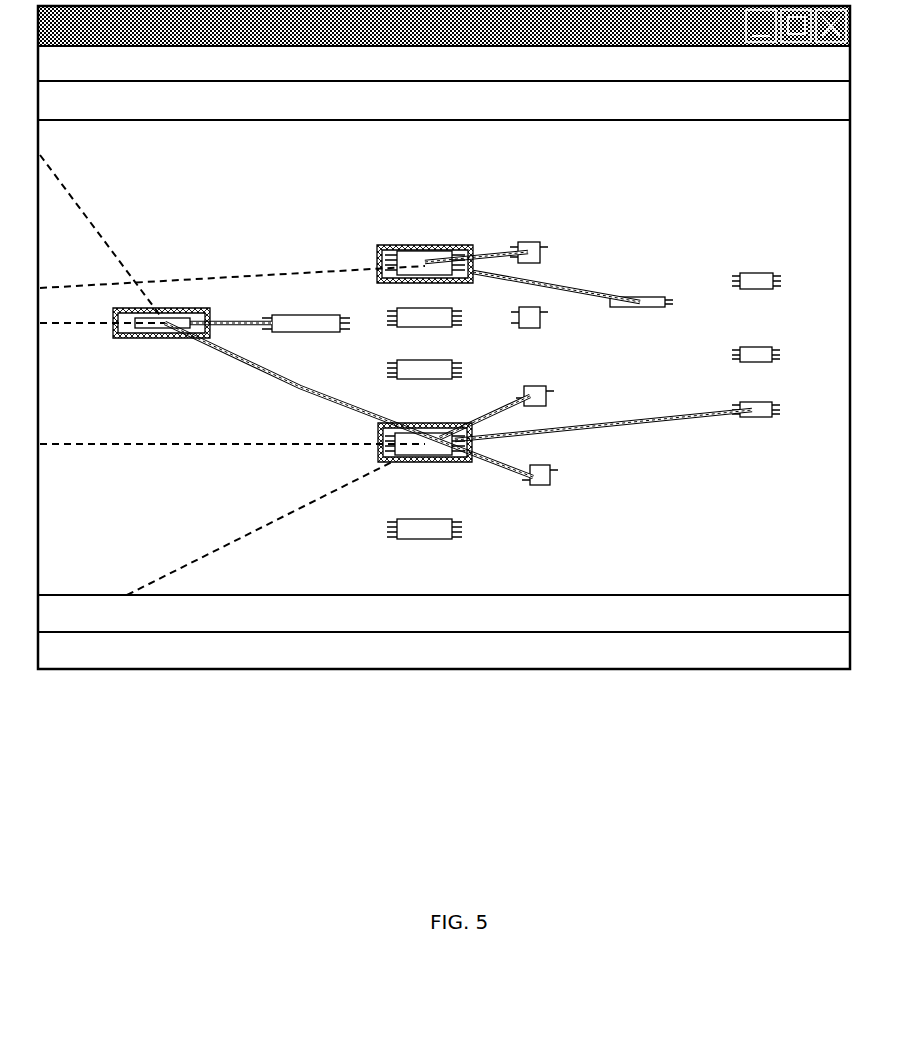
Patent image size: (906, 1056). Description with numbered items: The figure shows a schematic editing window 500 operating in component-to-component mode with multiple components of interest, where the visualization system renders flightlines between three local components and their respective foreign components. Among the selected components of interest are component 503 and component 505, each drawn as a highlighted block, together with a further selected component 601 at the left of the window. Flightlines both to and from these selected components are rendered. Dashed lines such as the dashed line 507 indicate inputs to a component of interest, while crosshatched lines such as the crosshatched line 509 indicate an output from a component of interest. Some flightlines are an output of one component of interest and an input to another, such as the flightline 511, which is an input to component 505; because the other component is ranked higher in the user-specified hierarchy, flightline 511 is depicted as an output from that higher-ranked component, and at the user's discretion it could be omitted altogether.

The schematic editing window in component-to-component mode 500 is at (85, 753).
The component 503 is at (406, 250).
The component 505 is at (448, 463).
The dashed line 507 is at (242, 276).
The crosshatched line 509 is at (573, 288).
The flightline 511 is at (270, 370).
The third selected component of interest 601 is at (145, 330).